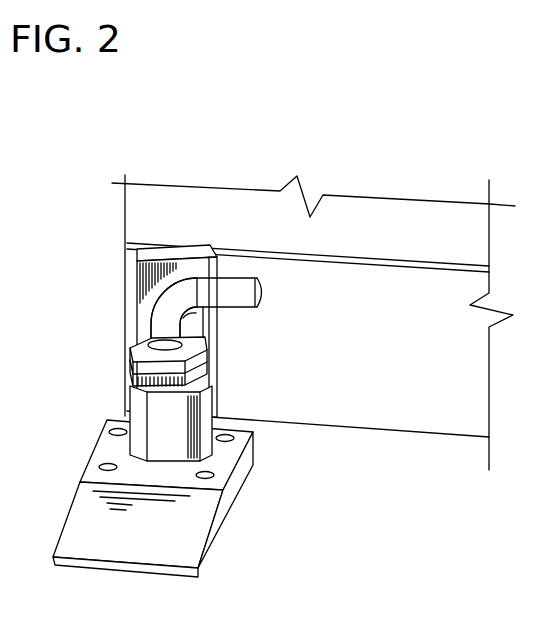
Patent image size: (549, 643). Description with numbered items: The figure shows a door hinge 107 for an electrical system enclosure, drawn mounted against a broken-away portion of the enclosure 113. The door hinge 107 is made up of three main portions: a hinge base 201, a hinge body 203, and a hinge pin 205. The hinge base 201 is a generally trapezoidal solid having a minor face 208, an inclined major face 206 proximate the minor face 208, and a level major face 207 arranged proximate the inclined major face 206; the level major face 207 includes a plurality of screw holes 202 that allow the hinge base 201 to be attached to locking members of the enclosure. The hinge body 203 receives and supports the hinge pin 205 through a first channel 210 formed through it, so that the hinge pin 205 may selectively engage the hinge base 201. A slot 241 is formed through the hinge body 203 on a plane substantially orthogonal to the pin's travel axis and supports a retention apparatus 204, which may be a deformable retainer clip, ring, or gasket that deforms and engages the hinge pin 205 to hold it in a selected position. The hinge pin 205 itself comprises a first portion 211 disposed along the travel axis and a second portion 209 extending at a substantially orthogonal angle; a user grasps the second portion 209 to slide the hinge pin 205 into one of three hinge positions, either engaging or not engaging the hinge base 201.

The door hinge 107 is at (366, 186).
The frame member 113 is at (329, 387).
The hinge base 201 is at (238, 477).
The screw holes 202 is at (100, 465).
The hinge body 203 is at (137, 418).
The retention apparatus 204 is at (140, 370).
The hinge pin 205 is at (165, 312).
The inclined major face 206 is at (117, 540).
The level major face 207 is at (150, 481).
The minor face 208 is at (165, 569).
The second portion 209 is at (233, 291).
The first channel 210 is at (136, 334).
The first portion 211 is at (185, 329).
The slot 241 is at (211, 357).